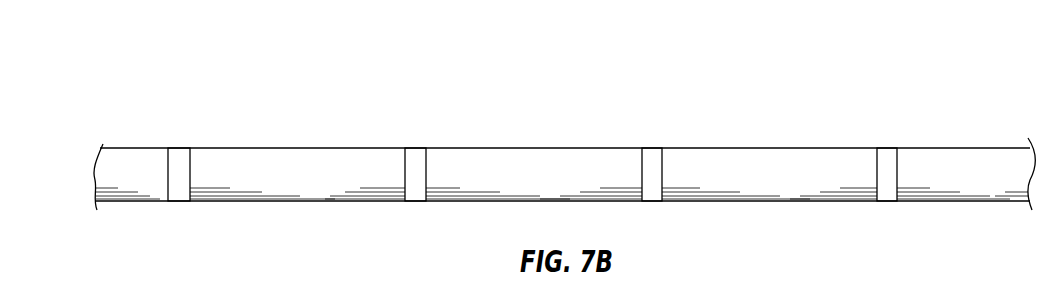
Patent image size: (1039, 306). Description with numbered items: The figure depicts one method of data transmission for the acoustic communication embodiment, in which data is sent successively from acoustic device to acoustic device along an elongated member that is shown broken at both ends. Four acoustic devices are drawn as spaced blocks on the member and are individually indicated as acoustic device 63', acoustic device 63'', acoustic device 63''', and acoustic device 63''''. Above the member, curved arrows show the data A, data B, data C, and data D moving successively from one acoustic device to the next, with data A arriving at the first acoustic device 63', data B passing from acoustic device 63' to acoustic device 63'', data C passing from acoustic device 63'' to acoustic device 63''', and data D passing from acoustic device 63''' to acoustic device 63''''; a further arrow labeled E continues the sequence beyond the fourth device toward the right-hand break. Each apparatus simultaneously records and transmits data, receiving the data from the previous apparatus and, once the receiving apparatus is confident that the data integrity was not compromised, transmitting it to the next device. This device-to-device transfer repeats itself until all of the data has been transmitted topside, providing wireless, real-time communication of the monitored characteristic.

The data A is at (168, 130).
The data B is at (403, 128).
The data C is at (640, 128).
The data D is at (877, 127).
The fifth segment of elongated member E is at (1030, 98).
The acoustic device 63' is at (168, 131).
The acoustic device 63'' is at (403, 130).
The acoustic device 63''' is at (639, 130).
The acoustic device 63'''' is at (874, 129).